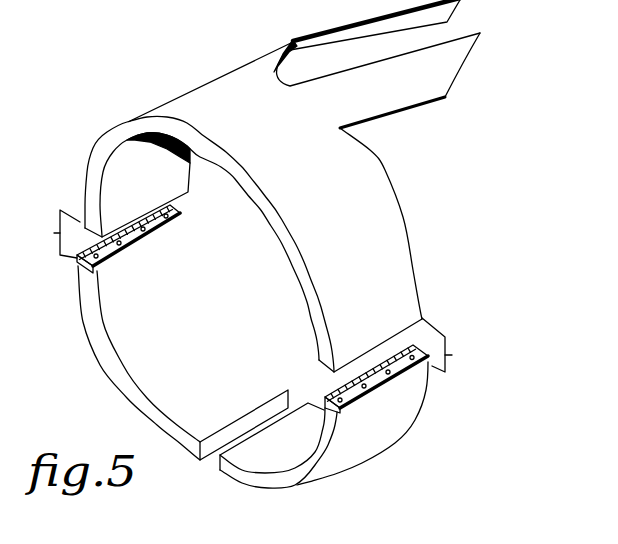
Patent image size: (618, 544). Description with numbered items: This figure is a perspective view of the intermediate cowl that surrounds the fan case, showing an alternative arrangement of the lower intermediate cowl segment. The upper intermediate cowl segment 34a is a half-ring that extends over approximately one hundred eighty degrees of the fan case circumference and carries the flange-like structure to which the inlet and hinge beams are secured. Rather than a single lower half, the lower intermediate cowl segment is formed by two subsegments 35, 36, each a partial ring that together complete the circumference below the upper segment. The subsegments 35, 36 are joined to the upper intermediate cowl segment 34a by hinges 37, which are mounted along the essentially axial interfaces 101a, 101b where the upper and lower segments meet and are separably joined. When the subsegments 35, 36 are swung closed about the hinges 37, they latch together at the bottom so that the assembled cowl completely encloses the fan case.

The upper intermediate cowl segment 34a is at (325, 163).
The subsegment 35 is at (193, 322).
The subsegment 36 is at (370, 435).
The hinges 37 is at (176, 211).
The axial interface 101a is at (461, 347).
The axial interface 101b is at (41, 234).